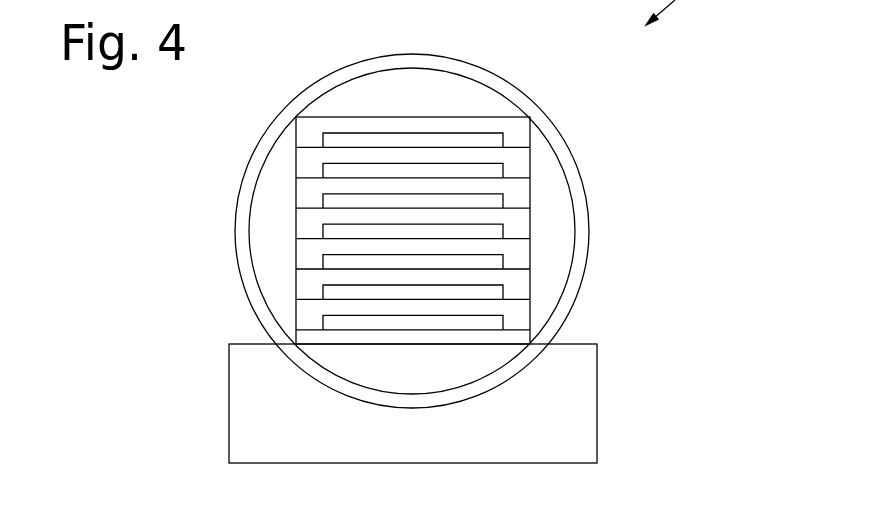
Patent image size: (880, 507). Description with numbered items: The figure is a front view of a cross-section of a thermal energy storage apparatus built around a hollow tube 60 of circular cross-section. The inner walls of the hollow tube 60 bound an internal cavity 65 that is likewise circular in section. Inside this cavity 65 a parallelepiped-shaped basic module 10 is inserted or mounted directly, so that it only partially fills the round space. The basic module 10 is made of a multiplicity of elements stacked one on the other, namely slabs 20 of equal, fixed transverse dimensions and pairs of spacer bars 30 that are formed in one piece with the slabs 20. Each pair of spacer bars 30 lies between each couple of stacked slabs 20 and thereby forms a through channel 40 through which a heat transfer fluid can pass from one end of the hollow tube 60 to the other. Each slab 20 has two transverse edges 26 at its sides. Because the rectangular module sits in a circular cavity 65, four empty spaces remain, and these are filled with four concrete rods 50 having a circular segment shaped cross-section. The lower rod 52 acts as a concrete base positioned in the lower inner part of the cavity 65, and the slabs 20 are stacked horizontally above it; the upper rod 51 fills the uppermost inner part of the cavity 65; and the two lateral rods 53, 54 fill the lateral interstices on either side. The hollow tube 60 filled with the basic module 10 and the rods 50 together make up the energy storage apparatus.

The basic module 10 is at (491, 230).
The slab 20 is at (500, 118).
The transverse edge 26 is at (297, 276).
The spacer bar 30 is at (530, 137).
The through channel 40 is at (430, 142).
The rod having a circular segment shape cross-section 50 is at (361, 84).
The upper rod 51 is at (397, 88).
The lower rod 52 is at (392, 370).
The lateral rod 53 is at (264, 217).
The lateral rod 54 is at (549, 201).
The hollow tube 60 is at (465, 54).
The internal cavity 65 is at (327, 93).